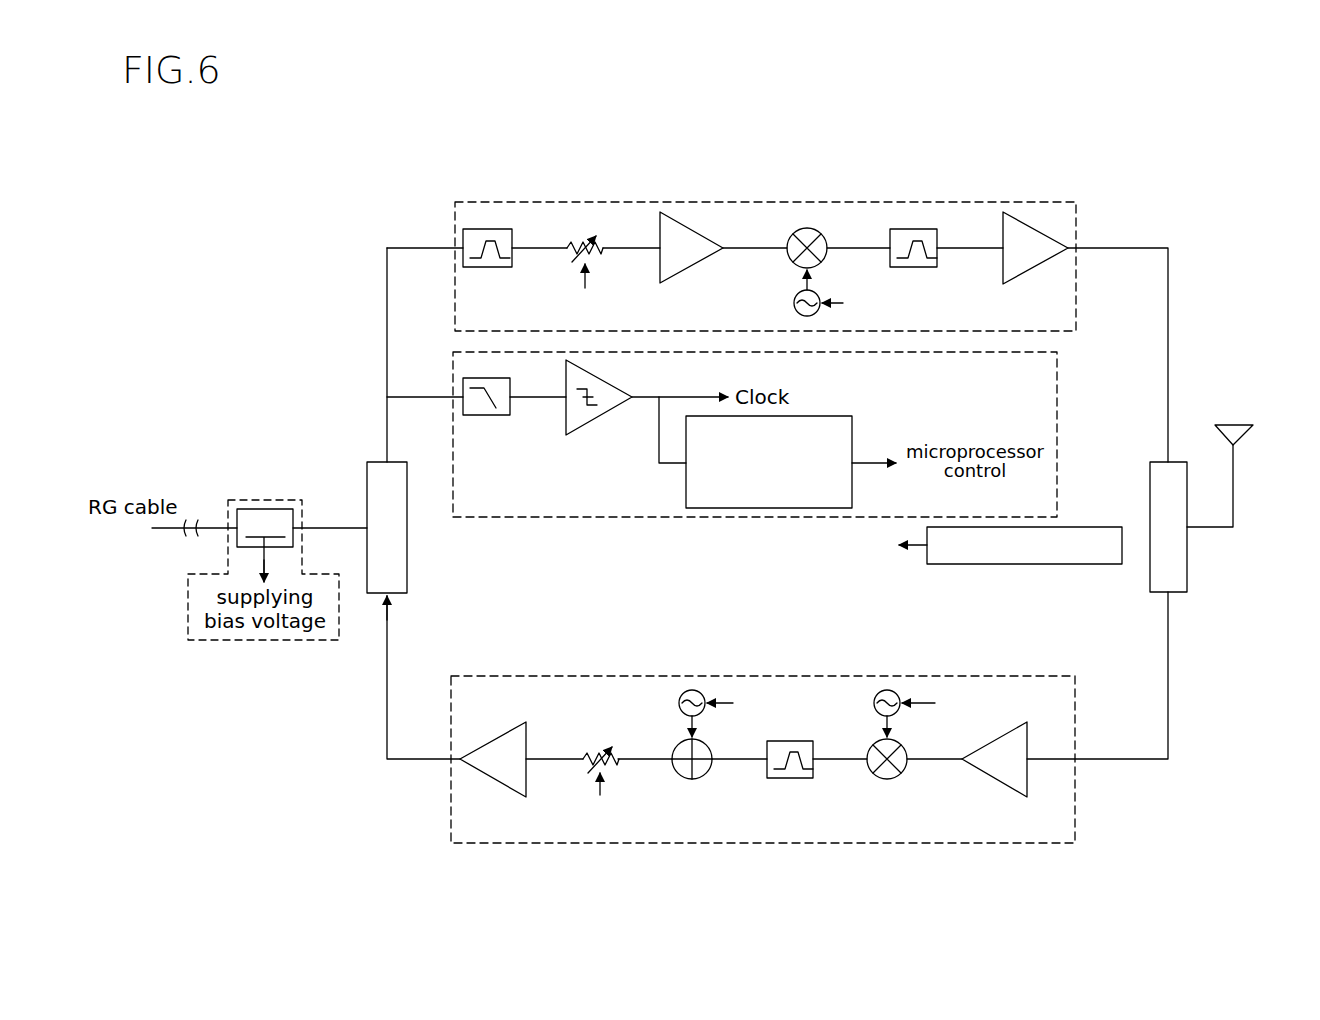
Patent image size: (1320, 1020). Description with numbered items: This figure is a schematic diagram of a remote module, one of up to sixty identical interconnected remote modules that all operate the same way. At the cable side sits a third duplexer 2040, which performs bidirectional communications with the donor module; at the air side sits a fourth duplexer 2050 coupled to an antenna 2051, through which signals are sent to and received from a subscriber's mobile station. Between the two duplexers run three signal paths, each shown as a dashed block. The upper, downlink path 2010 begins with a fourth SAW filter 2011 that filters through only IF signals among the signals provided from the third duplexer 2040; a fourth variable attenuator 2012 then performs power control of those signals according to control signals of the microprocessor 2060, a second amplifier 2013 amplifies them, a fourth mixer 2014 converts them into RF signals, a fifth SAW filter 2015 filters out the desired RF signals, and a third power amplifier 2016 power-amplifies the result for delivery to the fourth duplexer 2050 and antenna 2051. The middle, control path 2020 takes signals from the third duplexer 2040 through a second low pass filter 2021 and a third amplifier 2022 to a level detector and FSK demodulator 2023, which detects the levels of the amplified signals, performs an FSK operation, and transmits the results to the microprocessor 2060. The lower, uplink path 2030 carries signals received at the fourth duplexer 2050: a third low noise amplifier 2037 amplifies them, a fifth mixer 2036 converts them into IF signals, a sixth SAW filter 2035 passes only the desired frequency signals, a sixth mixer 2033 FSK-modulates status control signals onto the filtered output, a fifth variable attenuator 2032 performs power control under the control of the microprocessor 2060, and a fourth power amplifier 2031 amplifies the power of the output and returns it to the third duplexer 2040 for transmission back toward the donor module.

The transmitting unit 2010 is at (750, 202).
The fourth SAW filter 2011 is at (488, 229).
The fourth variable attenuator 2012 is at (577, 240).
The second amplifier 2013 is at (695, 232).
The fourth mixer 2014 is at (807, 228).
The fifth SAW filter 2015 is at (915, 229).
The third power amplifier 2016 is at (1037, 231).
The control signal processing unit 2020 is at (657, 517).
The second low pass filter 2021 is at (488, 415).
The third amplifier 2022 is at (597, 417).
The level detector and FSK demodulator 2023 is at (768, 508).
The receiving unit 2030 is at (612, 676).
The fourth power amplifier 2031 is at (498, 738).
The fifth variable attenuator 2032 is at (593, 752).
The sixth mixer 2033 is at (692, 779).
The sixth SAW filter 2035 is at (787, 778).
The fifth mixer 2036 is at (887, 779).
The third low noise amplifier 2037 is at (993, 780).
The third duplexer 2040 is at (367, 480).
The fourth duplexer 2050 is at (1187, 565).
The antenna 2051 is at (1242, 425).
The microprocessor 2060 is at (1010, 564).